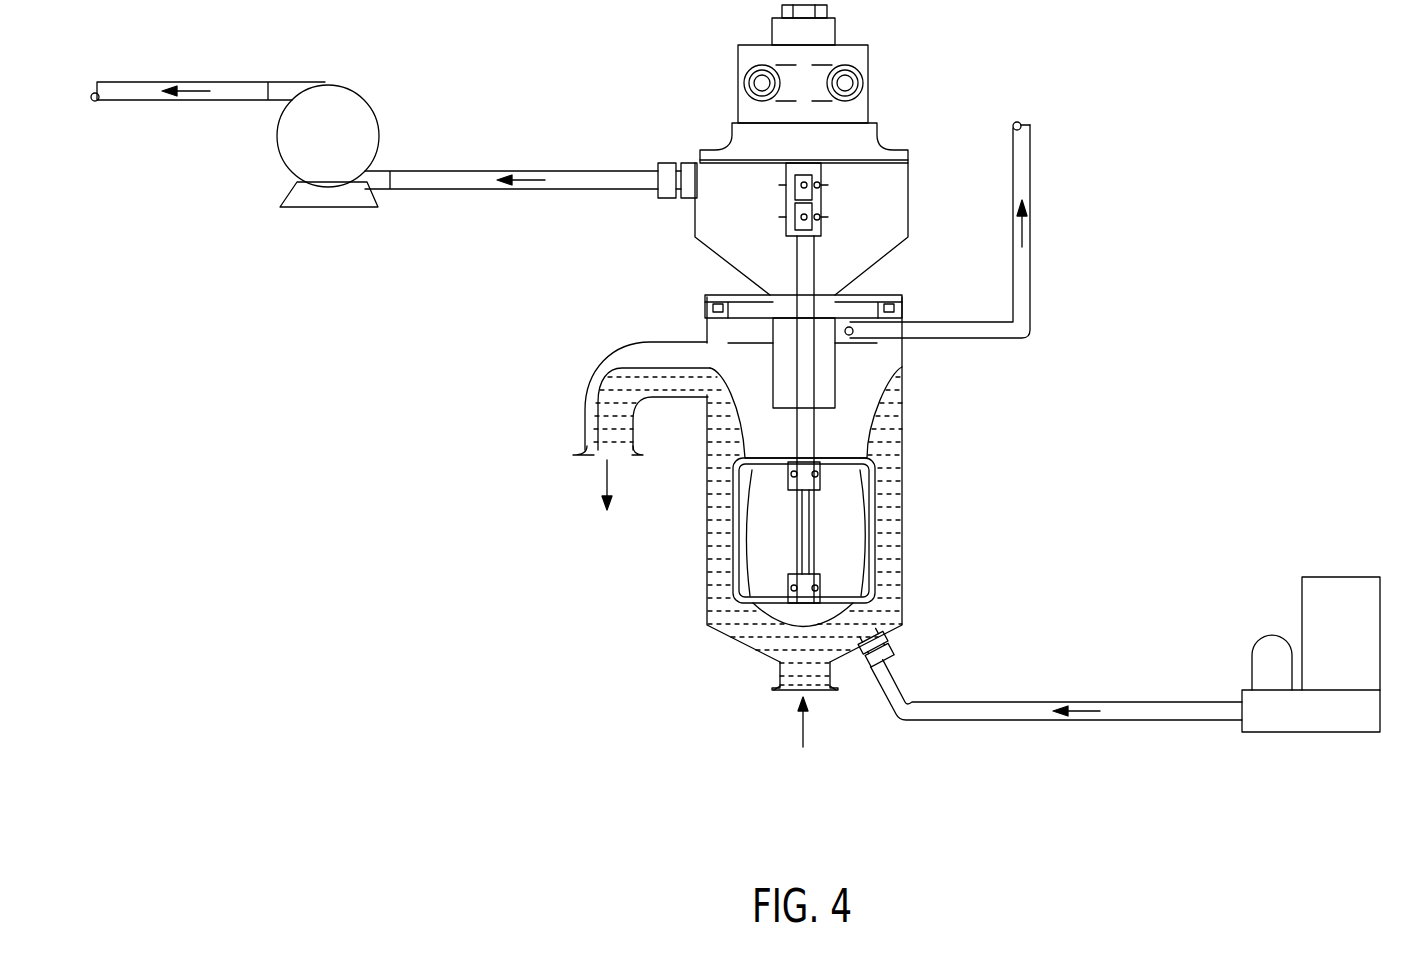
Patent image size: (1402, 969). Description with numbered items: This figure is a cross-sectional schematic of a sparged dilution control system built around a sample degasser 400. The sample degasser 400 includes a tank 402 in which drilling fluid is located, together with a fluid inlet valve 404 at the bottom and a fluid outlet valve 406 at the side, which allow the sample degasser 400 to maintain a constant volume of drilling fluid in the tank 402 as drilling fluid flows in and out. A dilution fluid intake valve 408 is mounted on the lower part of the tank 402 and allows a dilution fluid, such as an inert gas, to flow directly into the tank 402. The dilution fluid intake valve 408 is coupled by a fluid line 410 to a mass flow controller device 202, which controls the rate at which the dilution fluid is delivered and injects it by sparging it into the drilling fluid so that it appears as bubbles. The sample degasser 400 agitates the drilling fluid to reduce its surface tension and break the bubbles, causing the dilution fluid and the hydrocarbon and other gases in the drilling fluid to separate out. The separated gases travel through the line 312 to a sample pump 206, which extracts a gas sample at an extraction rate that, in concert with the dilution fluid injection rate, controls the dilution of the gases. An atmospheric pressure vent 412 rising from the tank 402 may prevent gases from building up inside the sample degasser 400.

The mass flow controller device 202 is at (1242, 732).
The sample pump 206 is at (362, 100).
The line 312 is at (553, 170).
The sample degasser 400 is at (708, 306).
The tank 402 is at (905, 572).
The fluid inlet valve 404 is at (776, 672).
The fluid outlet valve 406 is at (585, 445).
The dilution fluid intake valve 408 is at (893, 650).
The fluid line 410 is at (1070, 700).
The atmospheric pressure vent 412 is at (1031, 307).